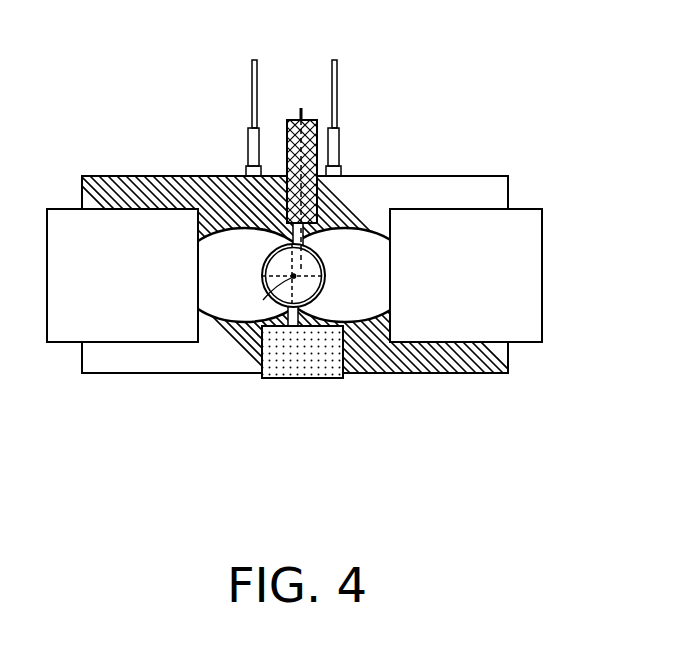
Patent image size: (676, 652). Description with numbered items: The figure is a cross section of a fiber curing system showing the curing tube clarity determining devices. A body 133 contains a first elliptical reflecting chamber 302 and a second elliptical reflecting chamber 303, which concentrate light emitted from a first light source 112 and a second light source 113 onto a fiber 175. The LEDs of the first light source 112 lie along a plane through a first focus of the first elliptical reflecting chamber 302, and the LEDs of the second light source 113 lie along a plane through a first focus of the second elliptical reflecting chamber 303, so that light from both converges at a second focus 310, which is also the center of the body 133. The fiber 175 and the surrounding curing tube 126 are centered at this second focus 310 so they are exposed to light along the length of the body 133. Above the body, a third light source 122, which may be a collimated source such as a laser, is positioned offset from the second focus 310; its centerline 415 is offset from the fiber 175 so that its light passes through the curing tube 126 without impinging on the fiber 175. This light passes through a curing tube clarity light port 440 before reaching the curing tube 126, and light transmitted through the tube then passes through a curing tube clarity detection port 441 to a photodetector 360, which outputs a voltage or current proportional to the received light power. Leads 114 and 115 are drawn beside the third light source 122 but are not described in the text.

The first light source 112 is at (63, 342).
The second light source 113 is at (525, 342).
The first electrical lead 114 is at (251, 93).
The second electrical lead 115 is at (338, 90).
The third light source 122 is at (300, 118).
The curing tube 126 is at (265, 273).
The body 133 is at (413, 373).
The fiber 175 is at (294, 277).
The first elliptical reflecting chamber 302 is at (262, 262).
The second elliptical reflecting chamber 303 is at (366, 262).
The second focus 310 is at (260, 296).
The photodetector 360 is at (306, 378).
The centerline 415 is at (301, 110).
The curing tube clarity light port 440 is at (305, 231).
The curing tube clarity detection port 441 is at (302, 323).